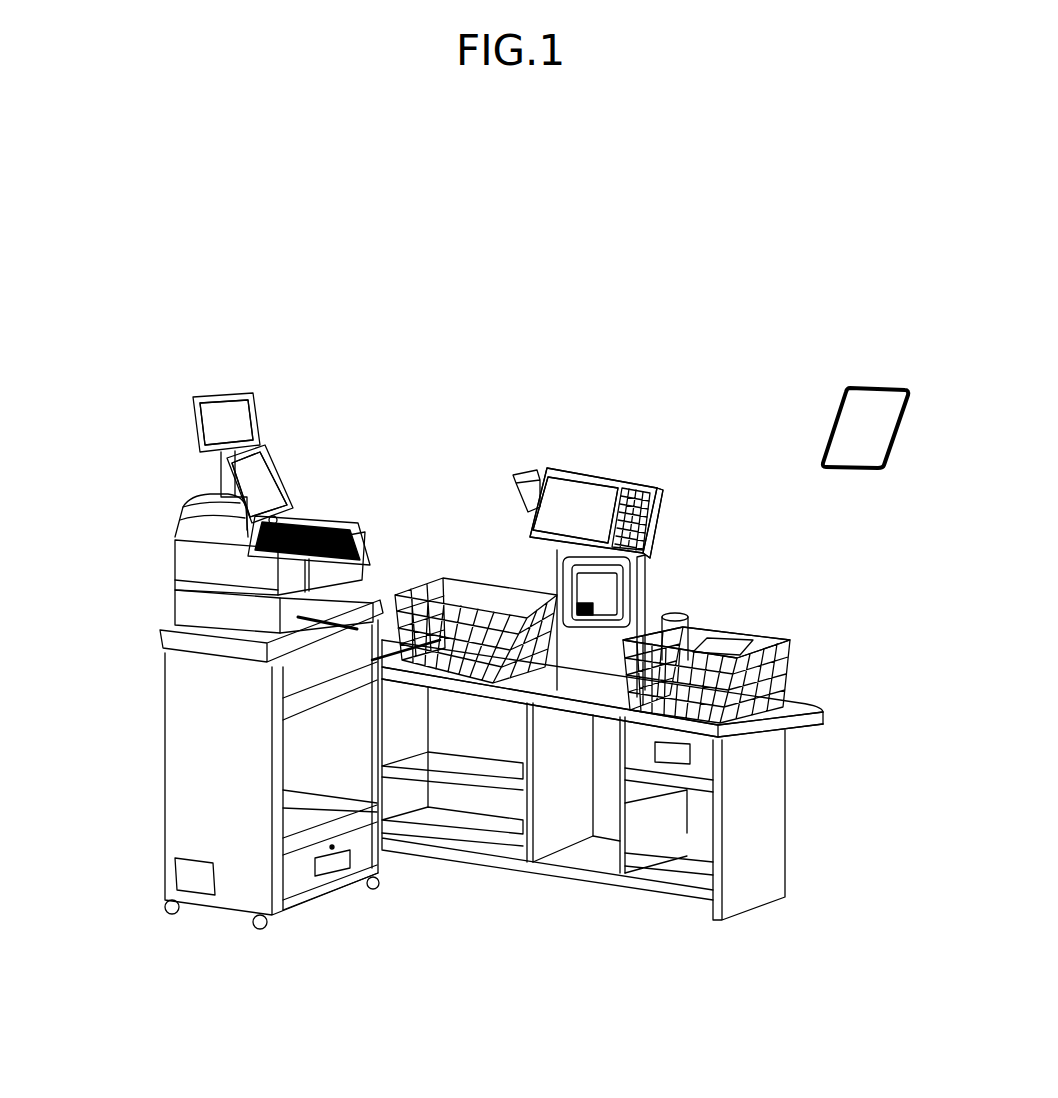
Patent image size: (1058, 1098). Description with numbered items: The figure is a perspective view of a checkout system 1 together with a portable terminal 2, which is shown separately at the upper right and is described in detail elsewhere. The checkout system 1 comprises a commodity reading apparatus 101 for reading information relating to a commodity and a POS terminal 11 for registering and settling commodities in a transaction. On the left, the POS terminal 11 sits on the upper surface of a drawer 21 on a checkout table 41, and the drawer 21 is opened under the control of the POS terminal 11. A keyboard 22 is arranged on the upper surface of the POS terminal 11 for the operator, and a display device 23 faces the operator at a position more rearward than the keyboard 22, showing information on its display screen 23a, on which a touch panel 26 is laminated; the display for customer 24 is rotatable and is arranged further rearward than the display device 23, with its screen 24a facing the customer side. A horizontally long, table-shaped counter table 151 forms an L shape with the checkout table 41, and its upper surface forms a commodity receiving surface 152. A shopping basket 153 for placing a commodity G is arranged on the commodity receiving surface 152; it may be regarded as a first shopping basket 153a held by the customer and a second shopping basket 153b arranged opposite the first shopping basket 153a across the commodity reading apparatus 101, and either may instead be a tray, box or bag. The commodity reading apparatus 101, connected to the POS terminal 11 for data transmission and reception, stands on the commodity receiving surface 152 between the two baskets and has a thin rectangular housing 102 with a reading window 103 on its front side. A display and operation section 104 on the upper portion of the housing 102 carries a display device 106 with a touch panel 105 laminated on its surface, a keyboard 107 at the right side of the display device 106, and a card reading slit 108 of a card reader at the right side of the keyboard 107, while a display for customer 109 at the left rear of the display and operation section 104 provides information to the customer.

The checkout system 1 is at (122, 418).
The portable terminal 2 is at (882, 372).
The POS terminal 11 is at (143, 525).
The drawer 21 is at (180, 605).
The keyboard 22 is at (334, 523).
The display device 23 is at (282, 441).
The display screen 23a is at (278, 493).
The display for customer 24 is at (228, 395).
The display screen 24a is at (213, 407).
The touch panel 26 is at (225, 482).
The checkout table 41 is at (185, 762).
The commodity reading apparatus 101 is at (520, 378).
The housing 102 is at (580, 650).
The reading window 103 is at (577, 587).
The display and operation section 104 is at (562, 470).
The touch panel 105 is at (588, 480).
The display device 106 is at (613, 480).
The keyboard 107 is at (647, 488).
The card reading slit 108 is at (662, 483).
The display for customer 109 is at (520, 473).
The counter table 151 is at (773, 840).
The commodity receiving surface 152 is at (793, 707).
The shopping basket 153 is at (790, 623).
The first shopping basket 153a is at (793, 643).
The second shopping basket 153b is at (423, 580).
The commodity G is at (680, 610).